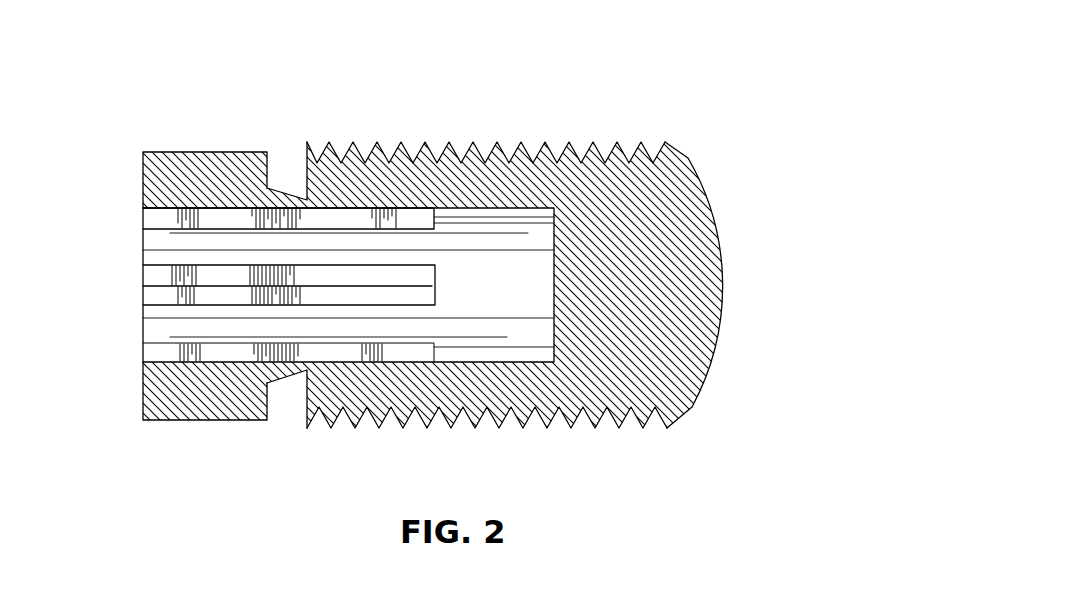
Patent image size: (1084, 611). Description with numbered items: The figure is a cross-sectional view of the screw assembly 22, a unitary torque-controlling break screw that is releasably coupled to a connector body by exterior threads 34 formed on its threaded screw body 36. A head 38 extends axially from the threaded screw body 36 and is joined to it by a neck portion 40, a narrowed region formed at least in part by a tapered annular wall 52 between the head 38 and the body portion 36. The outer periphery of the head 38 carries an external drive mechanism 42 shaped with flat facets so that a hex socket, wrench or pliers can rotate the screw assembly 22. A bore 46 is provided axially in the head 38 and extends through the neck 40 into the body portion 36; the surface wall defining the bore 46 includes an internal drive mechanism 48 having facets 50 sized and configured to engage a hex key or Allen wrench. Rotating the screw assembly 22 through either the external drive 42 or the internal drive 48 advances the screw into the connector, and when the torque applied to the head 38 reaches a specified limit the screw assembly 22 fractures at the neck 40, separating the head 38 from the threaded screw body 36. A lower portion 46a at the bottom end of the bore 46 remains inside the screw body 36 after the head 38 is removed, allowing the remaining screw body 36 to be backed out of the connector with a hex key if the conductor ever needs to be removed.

The screw assembly 22 is at (653, 108).
The exterior threads 34 is at (600, 430).
The threaded screw body 36 is at (687, 157).
The head 38 is at (172, 422).
The neck portion 40 is at (282, 190).
The external drive mechanism 42 is at (172, 148).
The bore 46 is at (162, 329).
The lower portion of bore 46a is at (428, 322).
The internal drive mechanism 48 is at (222, 316).
The facets 50 is at (414, 220).
The tapered annular wall 52 is at (287, 373).